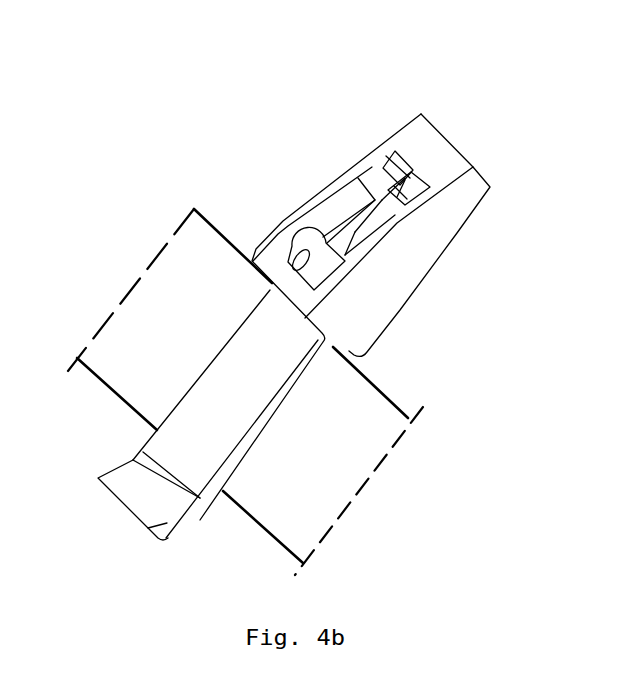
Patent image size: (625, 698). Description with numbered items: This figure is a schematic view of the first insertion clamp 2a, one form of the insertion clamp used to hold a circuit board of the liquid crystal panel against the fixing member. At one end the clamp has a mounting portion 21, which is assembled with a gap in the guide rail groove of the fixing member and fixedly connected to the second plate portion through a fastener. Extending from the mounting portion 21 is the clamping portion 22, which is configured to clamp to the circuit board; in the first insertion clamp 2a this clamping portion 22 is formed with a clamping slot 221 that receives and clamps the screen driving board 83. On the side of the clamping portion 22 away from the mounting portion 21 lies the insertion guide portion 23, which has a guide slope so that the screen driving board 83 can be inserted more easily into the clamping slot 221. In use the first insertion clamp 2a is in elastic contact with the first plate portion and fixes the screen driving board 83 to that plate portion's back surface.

The first insertion clamp 2a is at (405, 96).
The mounting portion 21 is at (274, 262).
The clamping portion 22 is at (217, 380).
The clamping slot 221 is at (288, 415).
The insertion guide portion 23 is at (197, 522).
The screen driving board 83 is at (342, 403).